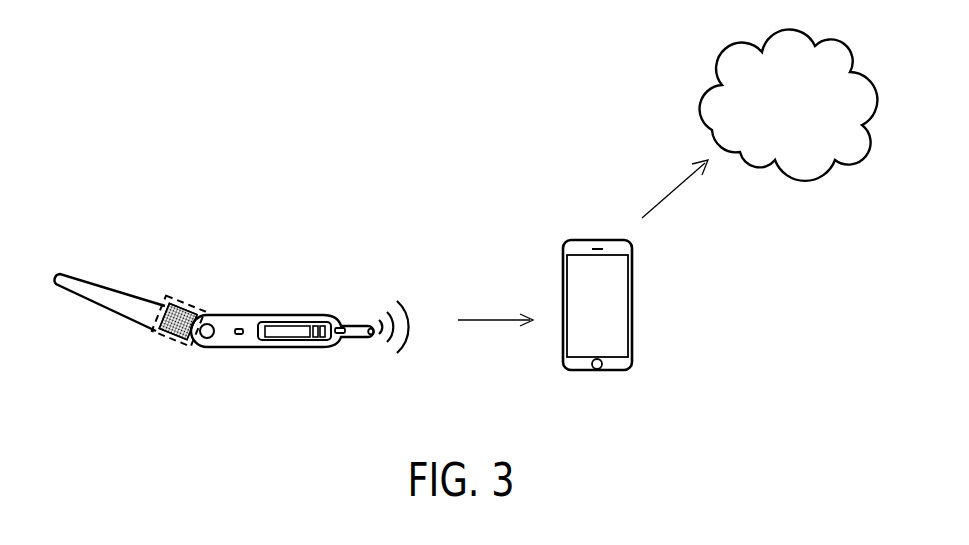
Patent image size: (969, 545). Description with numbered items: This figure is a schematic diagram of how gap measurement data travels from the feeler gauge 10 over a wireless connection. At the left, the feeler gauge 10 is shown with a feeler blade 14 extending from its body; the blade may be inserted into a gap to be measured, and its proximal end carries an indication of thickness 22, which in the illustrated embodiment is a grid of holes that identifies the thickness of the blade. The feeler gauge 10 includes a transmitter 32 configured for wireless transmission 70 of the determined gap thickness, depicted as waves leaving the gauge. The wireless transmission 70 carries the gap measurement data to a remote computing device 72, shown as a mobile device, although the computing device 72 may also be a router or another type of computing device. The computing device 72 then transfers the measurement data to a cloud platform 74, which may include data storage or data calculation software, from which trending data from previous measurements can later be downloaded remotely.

The feeler gauge 10 is at (299, 259).
The feeler blade 14 is at (105, 287).
The indication of thickness 22 is at (168, 338).
The transmitter 32 is at (342, 336).
The wireless transmission 70 is at (410, 318).
The computing device 72 is at (601, 370).
The cloud platform 74 is at (808, 168).